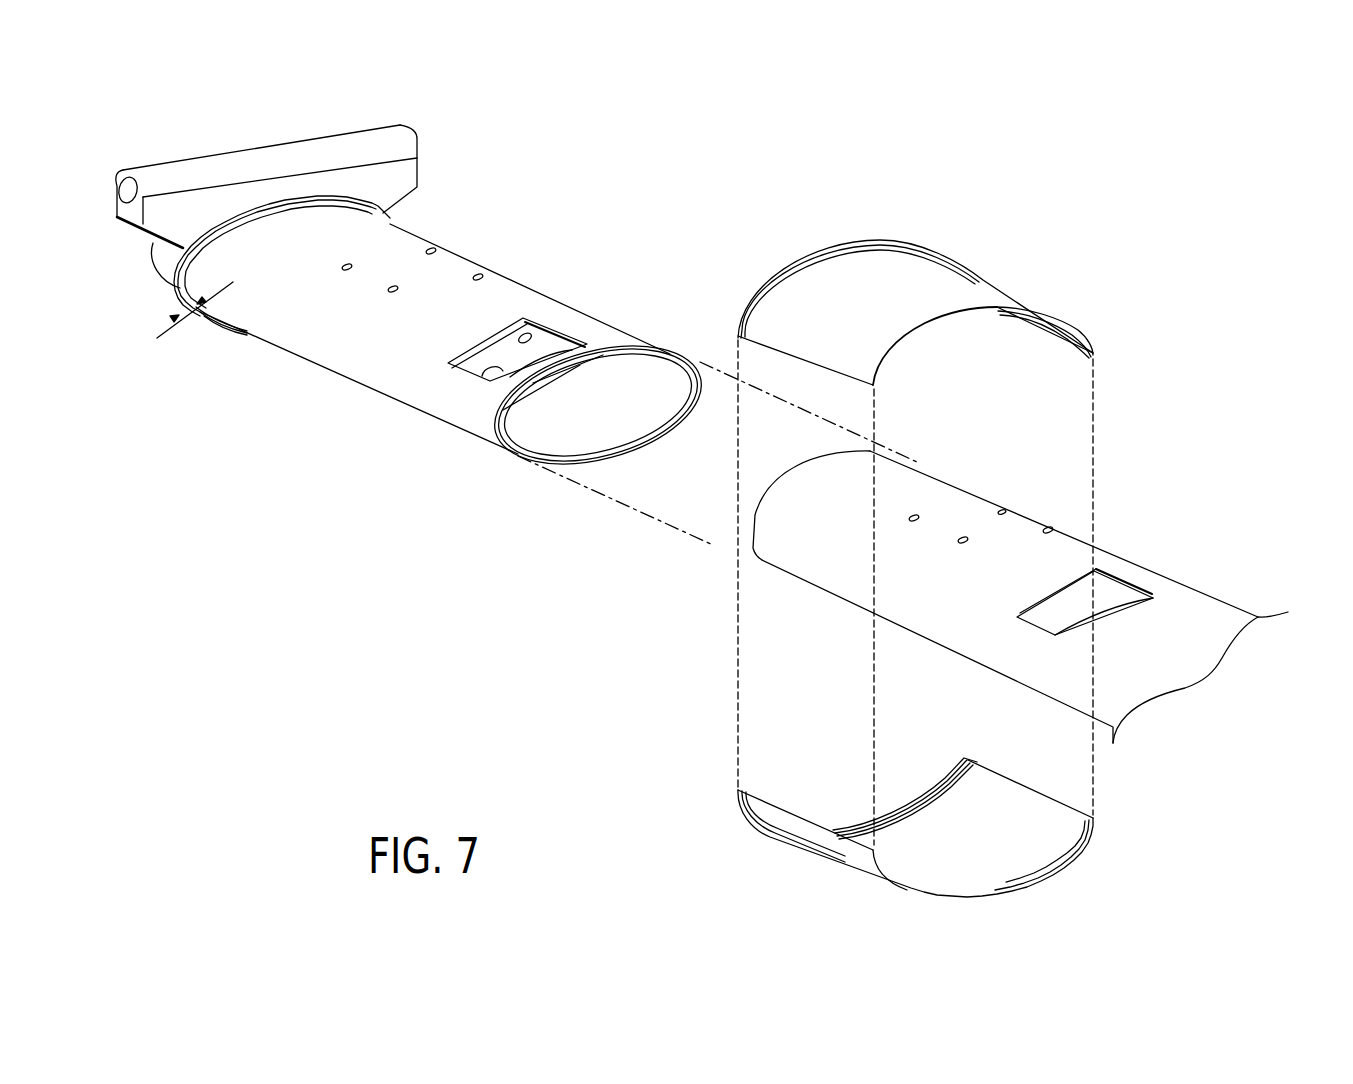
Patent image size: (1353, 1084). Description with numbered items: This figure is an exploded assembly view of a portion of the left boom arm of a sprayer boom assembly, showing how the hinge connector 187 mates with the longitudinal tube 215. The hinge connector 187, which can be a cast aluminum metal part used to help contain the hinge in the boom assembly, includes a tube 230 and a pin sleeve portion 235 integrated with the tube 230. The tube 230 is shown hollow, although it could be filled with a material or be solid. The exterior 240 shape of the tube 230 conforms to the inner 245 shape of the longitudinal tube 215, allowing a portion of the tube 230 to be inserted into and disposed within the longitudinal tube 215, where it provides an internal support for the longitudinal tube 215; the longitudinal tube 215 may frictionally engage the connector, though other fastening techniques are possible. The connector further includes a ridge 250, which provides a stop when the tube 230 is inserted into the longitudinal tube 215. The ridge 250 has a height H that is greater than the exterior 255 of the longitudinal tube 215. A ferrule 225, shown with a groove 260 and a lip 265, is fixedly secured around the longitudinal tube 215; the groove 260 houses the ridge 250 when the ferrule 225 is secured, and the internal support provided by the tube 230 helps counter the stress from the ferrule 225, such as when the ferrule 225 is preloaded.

The hinge connector 187 is at (417, 349).
The longitudinal tube 215 is at (980, 581).
The ferrule 225 is at (993, 288).
The tube 230 is at (669, 414).
The pin sleeve portion 235 is at (277, 157).
The exterior shape of the tube 240 is at (421, 242).
The inner shape of the longitudinal tube 245 is at (746, 545).
The ridge 250 is at (343, 208).
The exterior of the longitudinal tube 255 is at (1005, 507).
The groove 260 is at (952, 768).
The lip 265 is at (915, 792).
The height of the ridge H is at (178, 318).